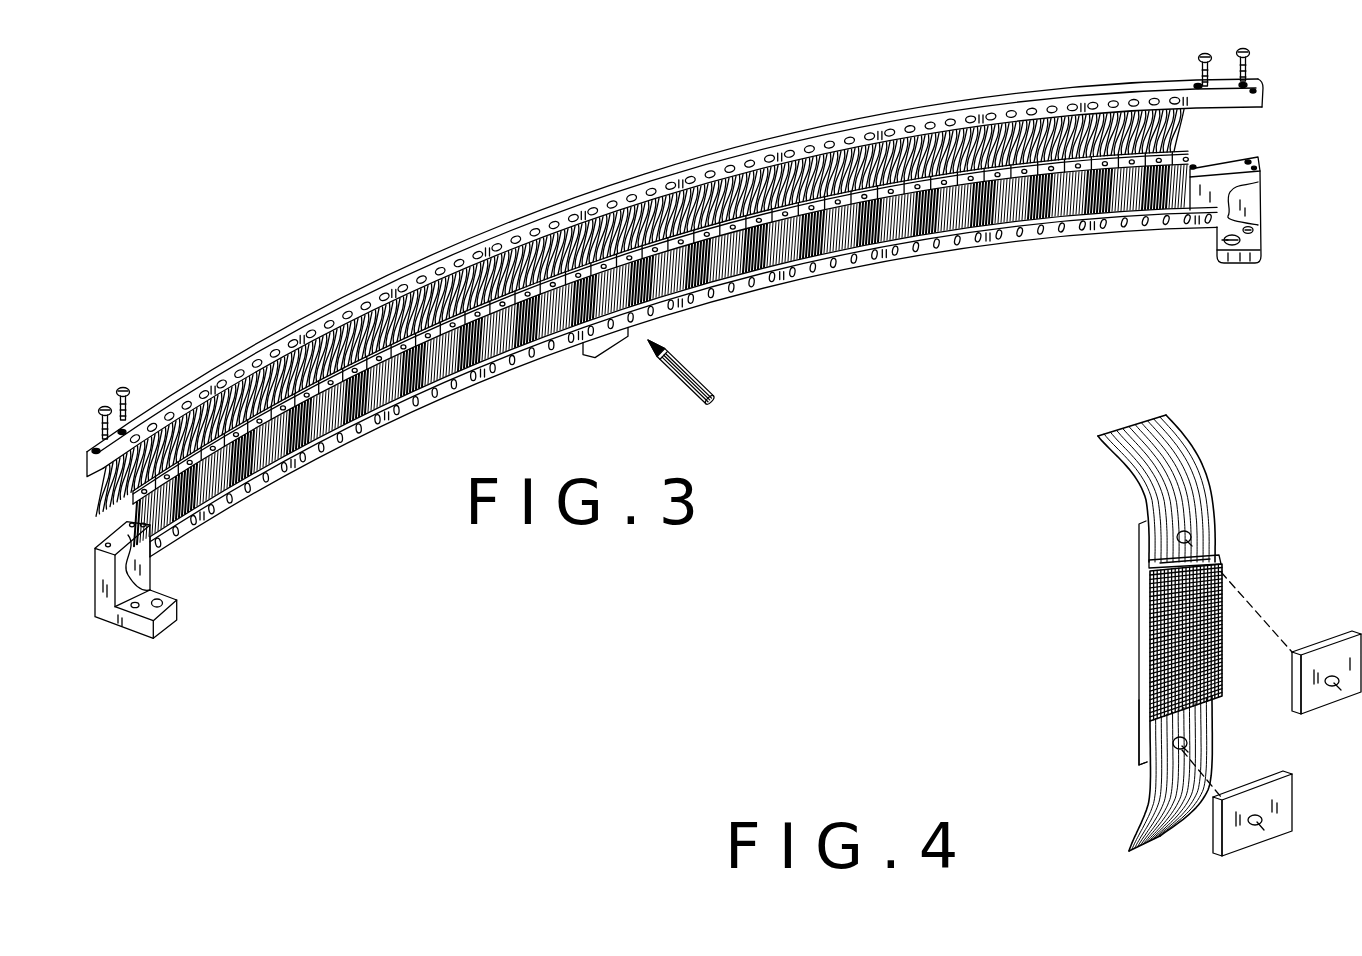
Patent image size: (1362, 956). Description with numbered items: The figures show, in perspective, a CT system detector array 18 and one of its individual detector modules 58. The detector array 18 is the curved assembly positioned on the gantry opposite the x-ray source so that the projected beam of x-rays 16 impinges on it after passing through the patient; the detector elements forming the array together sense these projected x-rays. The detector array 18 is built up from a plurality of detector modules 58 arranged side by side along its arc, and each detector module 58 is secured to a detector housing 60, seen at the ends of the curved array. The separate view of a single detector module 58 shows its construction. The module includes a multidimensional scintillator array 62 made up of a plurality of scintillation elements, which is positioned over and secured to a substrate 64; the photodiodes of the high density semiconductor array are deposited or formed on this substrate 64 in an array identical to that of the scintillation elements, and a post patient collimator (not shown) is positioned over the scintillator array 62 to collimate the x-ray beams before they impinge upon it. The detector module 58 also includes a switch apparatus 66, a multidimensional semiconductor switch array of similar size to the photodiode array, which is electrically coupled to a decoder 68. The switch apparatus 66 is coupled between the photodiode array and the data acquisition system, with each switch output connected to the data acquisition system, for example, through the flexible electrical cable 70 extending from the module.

In FIG. 3, the detector array 18 is at (631, 147).
In FIG. 3, the beam of x-rays 16 is at (705, 378).
In FIG. 3, the detector module 58 is at (490, 343).
In FIG. 4, the detector module 58 is at (1259, 581).
In FIG. 3, the detector housing 60 is at (1260, 190).
In FIG. 4, the flexible electrical cable 70 is at (1200, 462).
In FIG. 4, the decoder 68 is at (1148, 565).
In FIG. 4, the switch apparatus 66 is at (1150, 582).
In FIG. 4, the scintillator array 62 is at (1143, 652).
In FIG. 4, the substrate 64 is at (1138, 696).